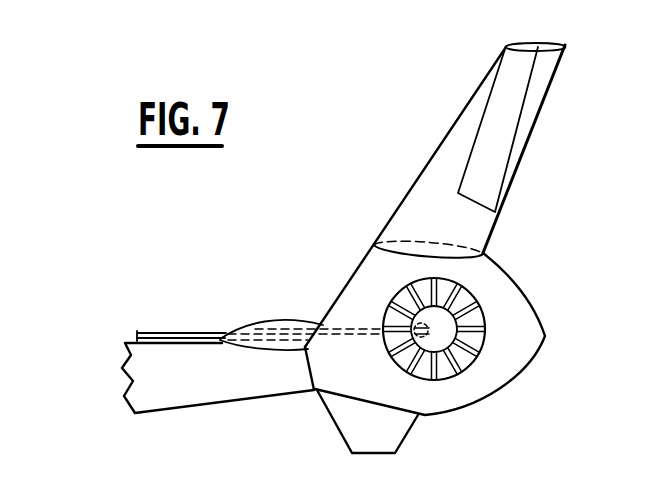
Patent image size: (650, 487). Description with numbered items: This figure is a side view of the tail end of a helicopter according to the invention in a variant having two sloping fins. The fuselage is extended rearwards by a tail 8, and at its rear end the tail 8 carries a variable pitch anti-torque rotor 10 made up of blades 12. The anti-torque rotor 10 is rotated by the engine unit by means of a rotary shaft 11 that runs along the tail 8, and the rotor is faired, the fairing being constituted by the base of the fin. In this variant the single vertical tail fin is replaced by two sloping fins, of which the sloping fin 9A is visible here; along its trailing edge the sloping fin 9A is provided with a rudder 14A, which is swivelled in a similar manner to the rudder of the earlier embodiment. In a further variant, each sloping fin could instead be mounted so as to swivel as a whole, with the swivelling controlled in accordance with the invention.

The tail 8 is at (190, 353).
The sloping fin 9A is at (477, 123).
The anti-torque rotor 10 is at (468, 295).
The rotary shaft 11 is at (158, 332).
The blades 12 is at (475, 337).
The rudder 14A is at (523, 118).